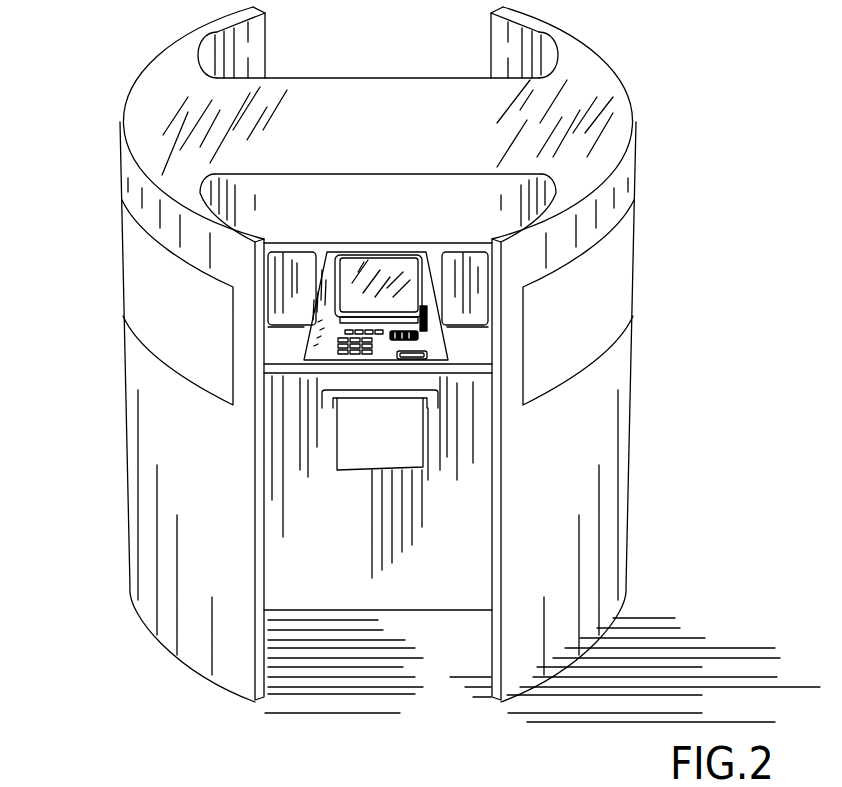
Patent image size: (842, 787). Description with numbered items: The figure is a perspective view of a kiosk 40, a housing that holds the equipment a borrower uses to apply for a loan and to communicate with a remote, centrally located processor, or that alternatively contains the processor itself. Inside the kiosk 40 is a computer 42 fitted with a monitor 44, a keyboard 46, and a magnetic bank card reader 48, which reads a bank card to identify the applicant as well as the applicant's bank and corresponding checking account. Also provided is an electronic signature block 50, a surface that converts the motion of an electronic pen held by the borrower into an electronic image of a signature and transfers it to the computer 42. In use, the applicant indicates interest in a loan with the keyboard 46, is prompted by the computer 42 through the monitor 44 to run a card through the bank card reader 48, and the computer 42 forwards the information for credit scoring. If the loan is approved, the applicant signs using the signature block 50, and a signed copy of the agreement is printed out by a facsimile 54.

The kiosk 40 is at (88, 447).
The computer 42 is at (354, 242).
The monitor 44 is at (407, 263).
The keyboard 46 is at (338, 345).
The magnetic bank card reader 48 is at (420, 358).
The electronic signature block 50 is at (433, 341).
The facsimile 54 is at (333, 410).